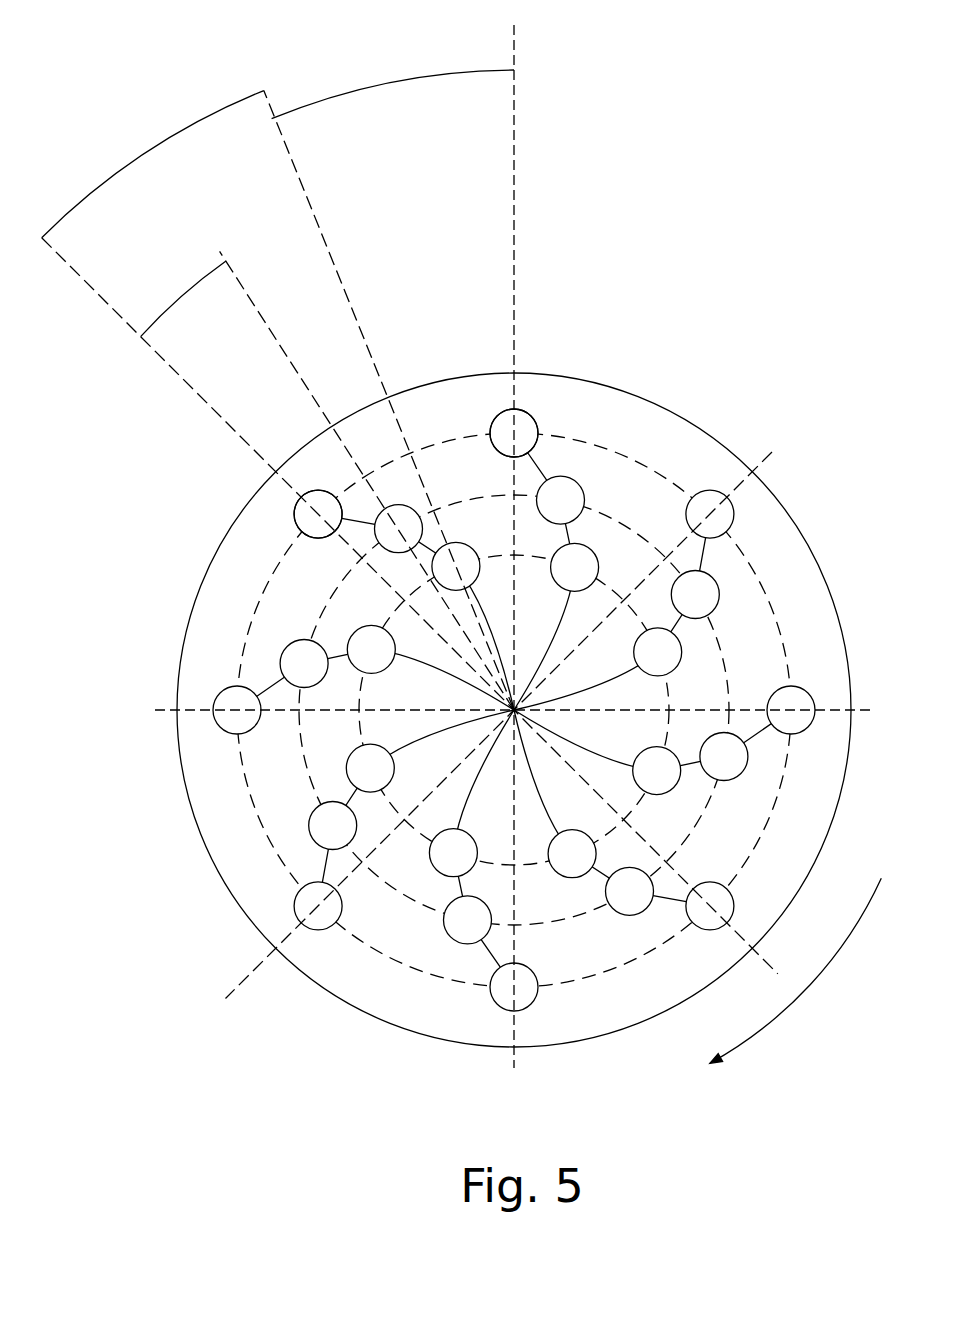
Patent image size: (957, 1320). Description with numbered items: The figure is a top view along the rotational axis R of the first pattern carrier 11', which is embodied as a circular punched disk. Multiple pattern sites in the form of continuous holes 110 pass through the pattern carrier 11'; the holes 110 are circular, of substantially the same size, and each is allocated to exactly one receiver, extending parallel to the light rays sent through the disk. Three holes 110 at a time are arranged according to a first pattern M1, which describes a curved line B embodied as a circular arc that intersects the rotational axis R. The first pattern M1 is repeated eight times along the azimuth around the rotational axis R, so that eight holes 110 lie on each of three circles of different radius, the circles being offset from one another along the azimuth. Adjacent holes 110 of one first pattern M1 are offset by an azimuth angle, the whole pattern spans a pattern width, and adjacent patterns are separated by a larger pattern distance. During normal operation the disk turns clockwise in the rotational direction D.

The continuous holes 110 is at (517, 420).
The first pattern carrier 11' is at (514, 690).
The first pattern M1 is at (488, 418).
The curved line B is at (540, 463).
The curve from center to spot A is at (513, 617).
The rotational axis R is at (518, 695).
The rotational direction D is at (795, 970).